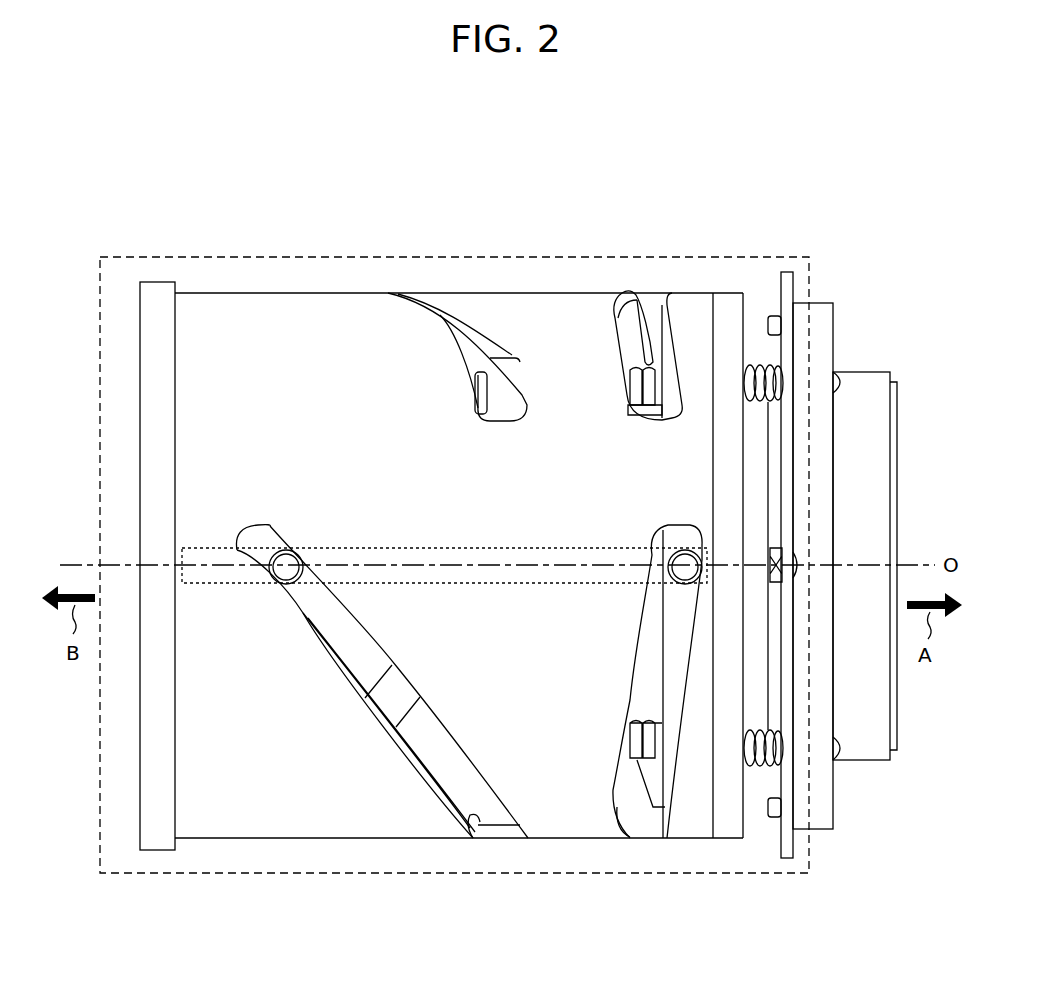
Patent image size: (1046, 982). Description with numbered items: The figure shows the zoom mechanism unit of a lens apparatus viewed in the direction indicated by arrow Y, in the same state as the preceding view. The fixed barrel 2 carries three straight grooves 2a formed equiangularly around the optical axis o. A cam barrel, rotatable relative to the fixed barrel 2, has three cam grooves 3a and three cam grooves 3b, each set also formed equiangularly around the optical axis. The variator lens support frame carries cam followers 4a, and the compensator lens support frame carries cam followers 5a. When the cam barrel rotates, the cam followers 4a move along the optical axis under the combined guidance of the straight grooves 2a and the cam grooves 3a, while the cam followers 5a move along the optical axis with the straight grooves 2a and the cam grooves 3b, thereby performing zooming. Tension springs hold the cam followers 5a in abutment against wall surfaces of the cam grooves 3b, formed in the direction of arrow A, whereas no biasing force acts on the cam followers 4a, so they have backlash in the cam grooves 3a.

The fixed barrel 2 is at (242, 256).
The straight grooves 2a is at (356, 548).
The cam grooves 3a is at (465, 838).
The cam grooves 3b is at (637, 838).
The cam followers 4a is at (285, 548).
The cam followers 5a is at (683, 548).